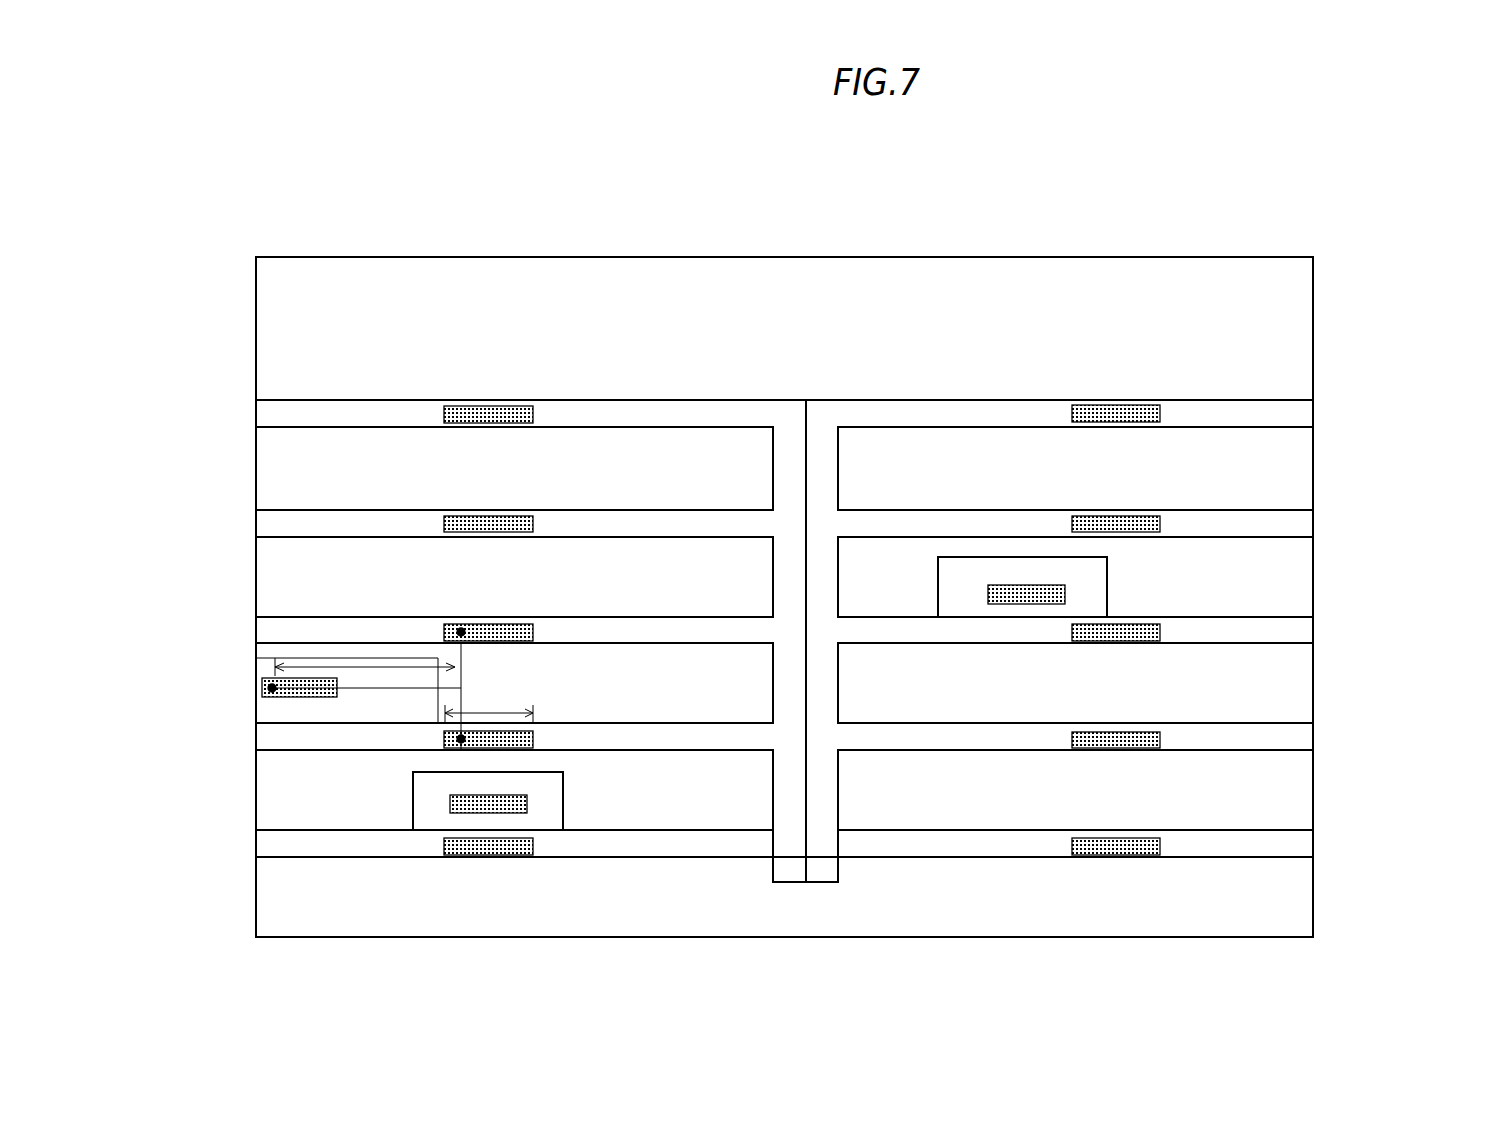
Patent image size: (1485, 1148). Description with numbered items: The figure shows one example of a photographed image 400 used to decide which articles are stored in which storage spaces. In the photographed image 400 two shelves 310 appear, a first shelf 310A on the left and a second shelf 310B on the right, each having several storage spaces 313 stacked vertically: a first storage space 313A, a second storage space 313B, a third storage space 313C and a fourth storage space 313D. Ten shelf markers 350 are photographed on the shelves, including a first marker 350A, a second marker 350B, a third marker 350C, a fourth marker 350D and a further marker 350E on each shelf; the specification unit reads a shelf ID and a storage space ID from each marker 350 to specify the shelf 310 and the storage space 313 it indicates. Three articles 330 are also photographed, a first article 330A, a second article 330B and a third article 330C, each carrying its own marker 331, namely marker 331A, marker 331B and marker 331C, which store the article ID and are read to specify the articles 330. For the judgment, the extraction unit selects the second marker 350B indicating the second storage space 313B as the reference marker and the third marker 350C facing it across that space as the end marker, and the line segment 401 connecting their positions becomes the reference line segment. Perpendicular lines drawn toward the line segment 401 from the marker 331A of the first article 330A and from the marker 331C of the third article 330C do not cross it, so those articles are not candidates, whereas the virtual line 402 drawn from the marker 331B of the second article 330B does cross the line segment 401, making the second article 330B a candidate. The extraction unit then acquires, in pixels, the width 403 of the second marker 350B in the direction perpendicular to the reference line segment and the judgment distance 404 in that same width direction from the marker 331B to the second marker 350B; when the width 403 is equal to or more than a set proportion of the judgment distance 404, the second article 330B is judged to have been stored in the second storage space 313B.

The photographed image 400 is at (1093, 257).
The shelf 310 is at (784, 577).
The first shelf 310A is at (700, 382).
The second shelf 310B is at (1063, 380).
The storage space 313 is at (785, 628).
The first storage space 313A is at (275, 818).
The second storage space 313B is at (275, 652).
The third storage space 313C is at (275, 586).
The fourth storage space 313D is at (282, 472).
The marker 350 is at (856, 595).
The first marker 350A is at (533, 838).
The second marker 350B is at (530, 730).
The third marker 350C is at (530, 622).
The fourth marker 350D is at (530, 512).
The marker 350E is at (540, 400).
The article 330 is at (603, 648).
The first article 330A is at (413, 805).
The second article 330B is at (272, 712).
The third article 330C is at (968, 582).
The marker 331 is at (598, 693).
The marker 331A is at (457, 807).
The marker 331B is at (262, 688).
The marker 331C is at (1023, 585).
The line segment 401 is at (463, 678).
The virtual line 402 is at (418, 688).
The width 403 is at (512, 712).
The judgment distance 404 is at (365, 667).